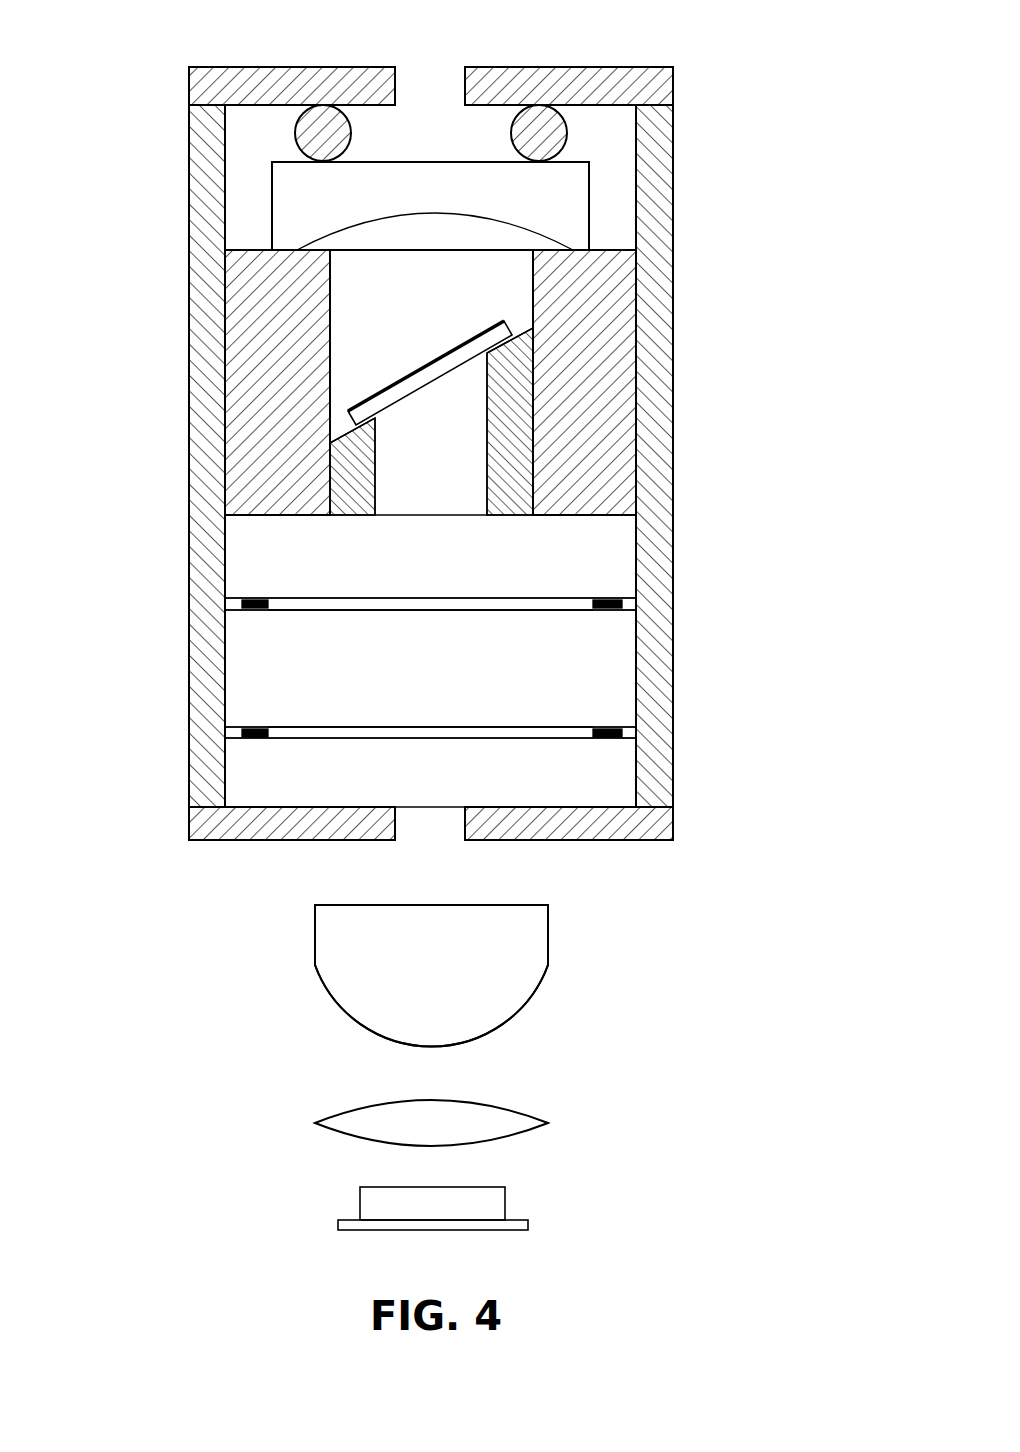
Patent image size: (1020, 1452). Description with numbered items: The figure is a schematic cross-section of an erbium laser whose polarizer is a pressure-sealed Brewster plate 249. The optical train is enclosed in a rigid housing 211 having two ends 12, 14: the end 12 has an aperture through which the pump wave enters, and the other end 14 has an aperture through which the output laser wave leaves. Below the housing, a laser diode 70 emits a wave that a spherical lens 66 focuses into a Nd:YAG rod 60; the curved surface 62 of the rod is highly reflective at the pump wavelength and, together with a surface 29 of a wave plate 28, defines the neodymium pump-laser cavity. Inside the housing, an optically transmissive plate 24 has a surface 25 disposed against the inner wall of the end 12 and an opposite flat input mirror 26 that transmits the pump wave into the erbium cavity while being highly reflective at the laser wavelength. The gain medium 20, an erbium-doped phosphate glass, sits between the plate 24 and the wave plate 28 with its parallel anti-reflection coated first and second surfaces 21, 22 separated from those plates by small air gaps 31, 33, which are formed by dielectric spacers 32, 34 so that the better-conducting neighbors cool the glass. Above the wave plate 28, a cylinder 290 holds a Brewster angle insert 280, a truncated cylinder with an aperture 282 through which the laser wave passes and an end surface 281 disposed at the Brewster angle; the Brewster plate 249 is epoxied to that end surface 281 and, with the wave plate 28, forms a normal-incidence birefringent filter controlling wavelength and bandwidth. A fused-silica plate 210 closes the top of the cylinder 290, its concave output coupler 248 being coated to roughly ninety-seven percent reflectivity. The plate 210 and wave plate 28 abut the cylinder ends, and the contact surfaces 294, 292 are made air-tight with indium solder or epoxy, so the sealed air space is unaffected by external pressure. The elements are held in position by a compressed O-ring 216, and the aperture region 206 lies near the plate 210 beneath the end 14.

The end 12 is at (633, 842).
The end 14 is at (577, 66).
The gain medium 20 is at (272, 663).
The first surface 21 is at (320, 727).
The second surface 22 is at (320, 610).
The optically transmissive plate 24 is at (608, 777).
The surface 25 is at (585, 807).
The input mirror 26 is at (575, 740).
The wave plate 28 is at (575, 557).
The surface 29 is at (320, 598).
The air gap 31 is at (300, 735).
The spacer 32 is at (290, 740).
The air gap 33 is at (547, 605).
The spacer 34 is at (617, 598).
The Nd:YAG rod 60 is at (517, 962).
The curved surface 62 is at (520, 1020).
The spherical lens 66 is at (548, 1123).
The laser diode 70 is at (528, 1222).
The aperture opening 206 is at (465, 160).
The plate 210 is at (542, 205).
The housing 211 is at (187, 192).
The O-ring 216 is at (600, 100).
The output coupler 248 is at (353, 232).
The Brewster plate 249 is at (350, 408).
The Brewster angle insert 280 is at (515, 358).
The end surface 281 is at (535, 300).
The aperture 282 is at (413, 471).
The cylinder 290 is at (600, 348).
The contact surface 292 is at (603, 505).
The contact surface 294 is at (528, 330).